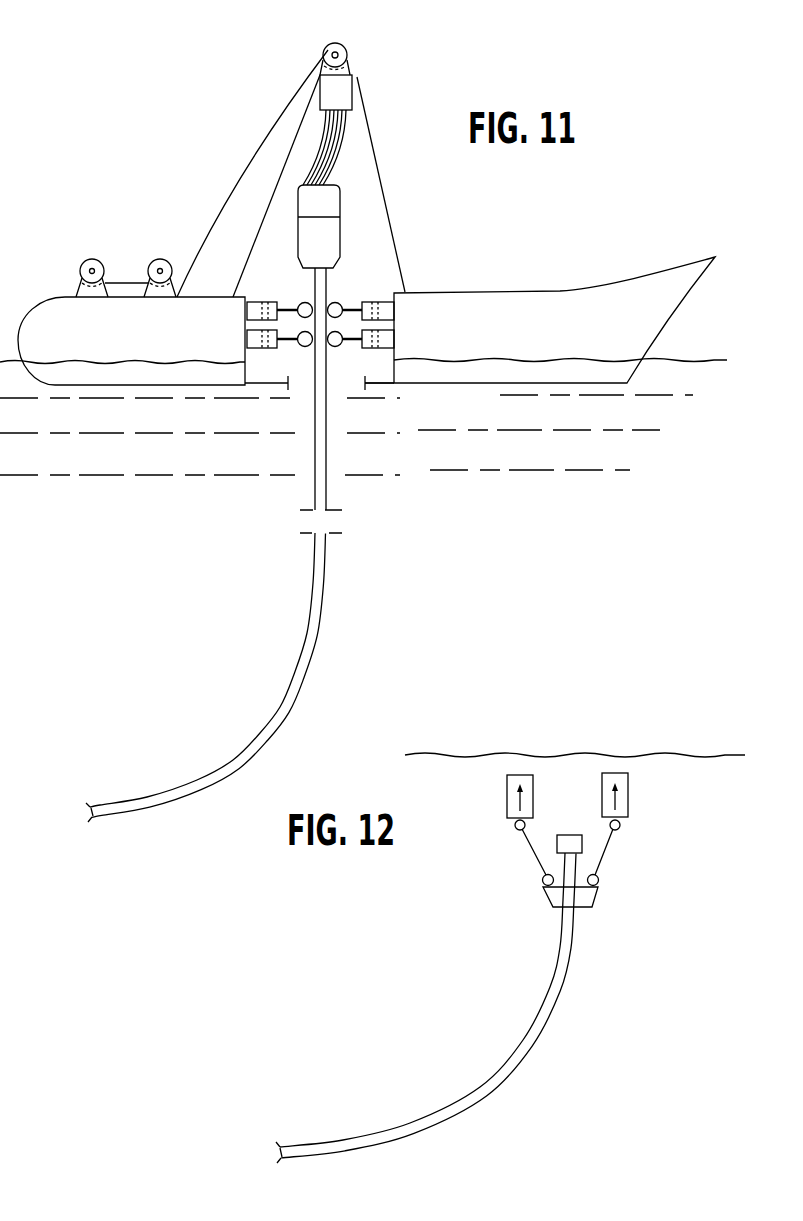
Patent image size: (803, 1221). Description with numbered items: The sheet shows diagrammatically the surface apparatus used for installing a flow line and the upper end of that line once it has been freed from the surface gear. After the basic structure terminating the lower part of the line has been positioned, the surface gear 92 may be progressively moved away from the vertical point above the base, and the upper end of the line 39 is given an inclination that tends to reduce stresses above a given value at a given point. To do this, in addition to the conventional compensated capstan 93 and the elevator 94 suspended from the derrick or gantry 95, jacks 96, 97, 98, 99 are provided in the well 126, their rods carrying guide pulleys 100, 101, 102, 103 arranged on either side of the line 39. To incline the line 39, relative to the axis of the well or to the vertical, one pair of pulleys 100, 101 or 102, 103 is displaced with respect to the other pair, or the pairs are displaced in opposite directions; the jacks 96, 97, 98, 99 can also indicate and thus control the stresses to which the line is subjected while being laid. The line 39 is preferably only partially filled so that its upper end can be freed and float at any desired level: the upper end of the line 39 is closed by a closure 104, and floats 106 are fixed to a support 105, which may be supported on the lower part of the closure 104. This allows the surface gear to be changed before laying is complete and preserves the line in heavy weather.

In FIG. 11, the line 39 is at (343, 467).
In FIG. 12, the line 39 is at (564, 1013).
In FIG. 11, the surface gear 92 is at (542, 278).
In FIG. 11, the compensated capstan 93 is at (92, 258).
In FIG. 11, the elevator 94 is at (333, 228).
In FIG. 11, the derrick or gantry 95 is at (380, 169).
In FIG. 11, the jack 96 is at (245, 311).
In FIG. 11, the jack 97 is at (394, 309).
In FIG. 11, the jack 98 is at (245, 340).
In FIG. 11, the jack 99 is at (394, 337).
In FIG. 11, the guide pulley 100 is at (304, 301).
In FIG. 11, the guide pulley 101 is at (336, 301).
In FIG. 11, the guide pulley 102 is at (302, 347).
In FIG. 11, the guide pulley 103 is at (333, 347).
In FIG. 12, the closure 104 is at (582, 821).
In FIG. 12, the support 105 is at (585, 895).
In FIG. 12, the floats 106 is at (507, 781).
In FIG. 11, the well 126 is at (373, 365).